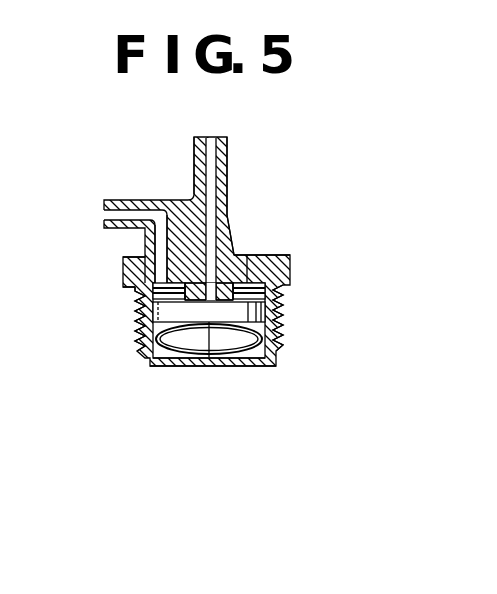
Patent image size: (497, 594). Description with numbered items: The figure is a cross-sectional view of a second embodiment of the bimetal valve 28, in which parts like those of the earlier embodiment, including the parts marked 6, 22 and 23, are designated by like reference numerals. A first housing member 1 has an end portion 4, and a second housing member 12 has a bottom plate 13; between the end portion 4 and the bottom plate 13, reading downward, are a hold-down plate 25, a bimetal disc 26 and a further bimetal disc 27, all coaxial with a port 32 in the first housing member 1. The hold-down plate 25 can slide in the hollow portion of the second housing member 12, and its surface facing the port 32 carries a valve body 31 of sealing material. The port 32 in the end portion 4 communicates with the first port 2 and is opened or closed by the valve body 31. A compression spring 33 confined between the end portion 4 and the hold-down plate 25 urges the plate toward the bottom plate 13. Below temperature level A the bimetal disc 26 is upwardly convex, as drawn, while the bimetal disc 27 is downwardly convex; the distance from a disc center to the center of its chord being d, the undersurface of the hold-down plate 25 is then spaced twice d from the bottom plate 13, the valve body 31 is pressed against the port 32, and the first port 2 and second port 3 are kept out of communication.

The first housing member 1 is at (228, 173).
The first port 2 is at (211, 139).
The second port 3 is at (105, 218).
The end portion 4 is at (253, 263).
The vertical channel 6 is at (160, 270).
The second housing member 12 is at (142, 365).
The bottom plate 13 is at (209, 356).
The nut flange 22 is at (133, 283).
The external thread 23 is at (143, 326).
The hold-down plate 25 is at (278, 312).
The bimetal disc 26 is at (274, 335).
The bimetal disc 27 is at (246, 362).
The bimetal valve 28 is at (333, 203).
The valve body 31 is at (276, 302).
The port 32 is at (234, 248).
The compression spring 33 is at (150, 302).
The distance from disc center to chord center d is at (203, 333).